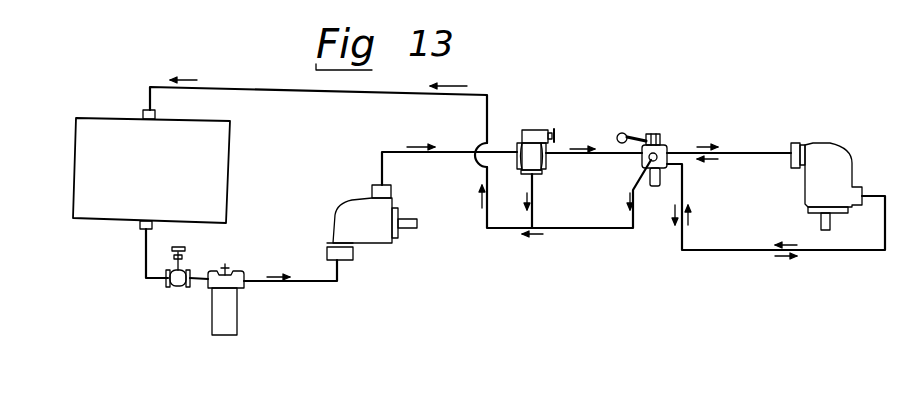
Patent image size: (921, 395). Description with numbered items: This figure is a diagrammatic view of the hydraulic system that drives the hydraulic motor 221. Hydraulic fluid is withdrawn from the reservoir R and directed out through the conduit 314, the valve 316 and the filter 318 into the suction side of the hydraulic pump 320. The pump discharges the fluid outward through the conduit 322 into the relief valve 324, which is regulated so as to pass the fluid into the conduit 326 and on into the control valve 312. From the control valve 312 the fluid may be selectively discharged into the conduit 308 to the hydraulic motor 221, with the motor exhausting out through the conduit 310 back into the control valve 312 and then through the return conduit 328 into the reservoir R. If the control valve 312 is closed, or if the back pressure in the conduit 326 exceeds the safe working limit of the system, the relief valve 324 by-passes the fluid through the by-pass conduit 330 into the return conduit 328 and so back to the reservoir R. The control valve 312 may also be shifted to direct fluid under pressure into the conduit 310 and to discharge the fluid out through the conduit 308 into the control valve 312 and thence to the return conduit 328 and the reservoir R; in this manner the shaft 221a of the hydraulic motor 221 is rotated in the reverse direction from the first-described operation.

The reservoir R is at (232, 170).
The conduit 314 is at (143, 257).
The valve 316 is at (182, 287).
The filter 318 is at (236, 323).
The hydraulic pump 320 is at (376, 242).
The conduit 322 is at (398, 150).
The relief valve 324 is at (532, 146).
The conduit 326 is at (602, 152).
The return conduit 328 is at (567, 230).
The by-pass conduit 330 is at (534, 200).
The control valve 312 is at (662, 143).
The conduit 308 is at (748, 152).
The conduit 310 is at (737, 249).
The hydraulic motor 221 is at (835, 158).
The shaft 221a is at (822, 226).